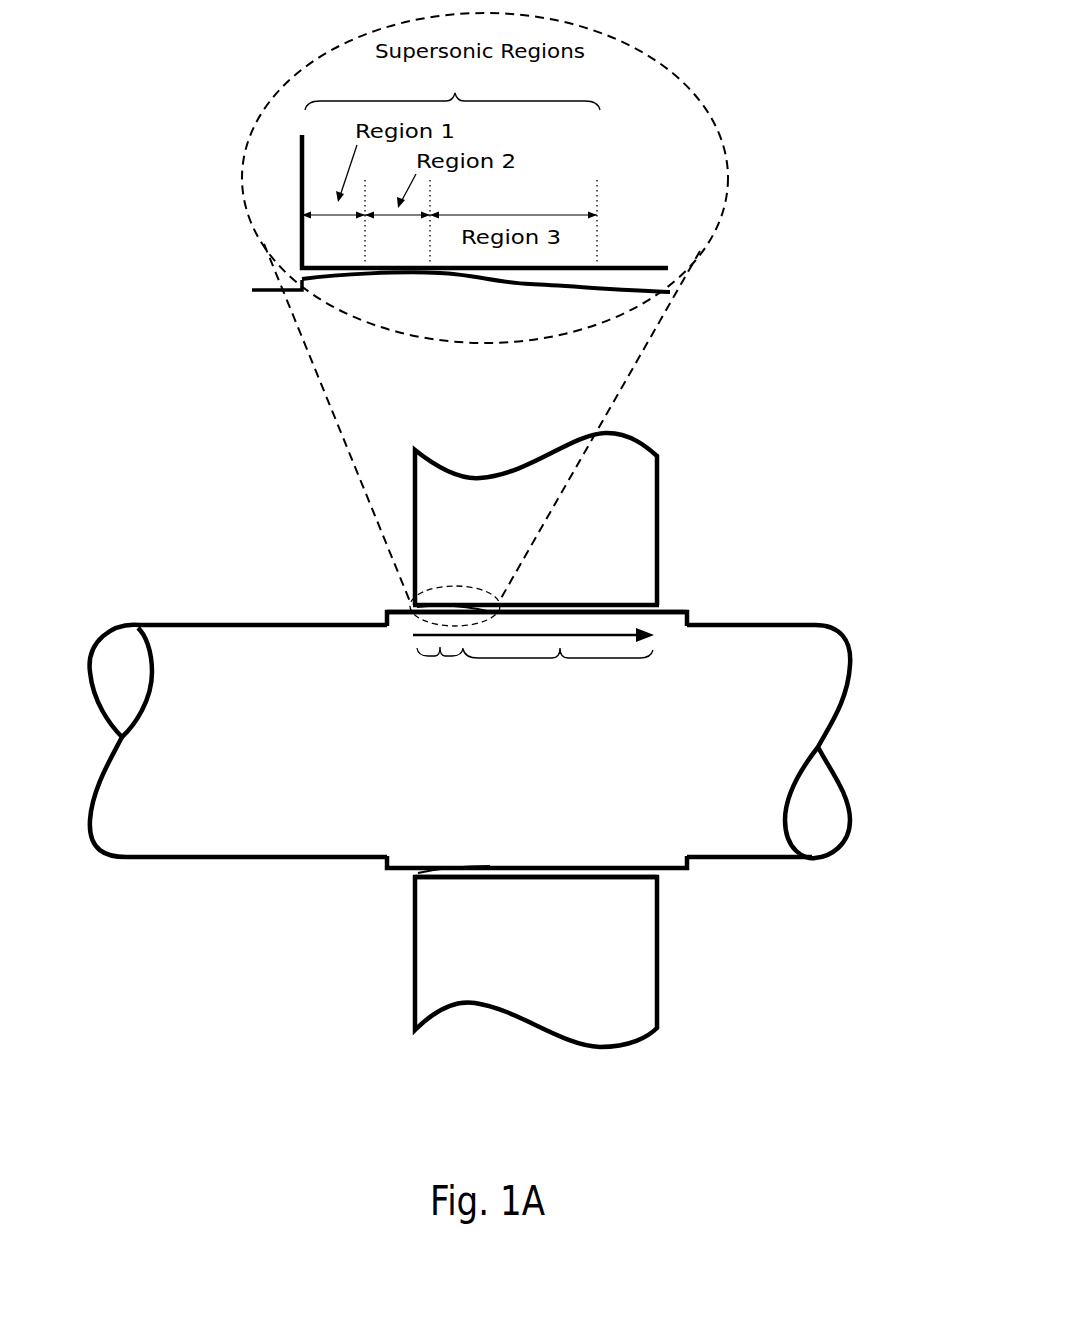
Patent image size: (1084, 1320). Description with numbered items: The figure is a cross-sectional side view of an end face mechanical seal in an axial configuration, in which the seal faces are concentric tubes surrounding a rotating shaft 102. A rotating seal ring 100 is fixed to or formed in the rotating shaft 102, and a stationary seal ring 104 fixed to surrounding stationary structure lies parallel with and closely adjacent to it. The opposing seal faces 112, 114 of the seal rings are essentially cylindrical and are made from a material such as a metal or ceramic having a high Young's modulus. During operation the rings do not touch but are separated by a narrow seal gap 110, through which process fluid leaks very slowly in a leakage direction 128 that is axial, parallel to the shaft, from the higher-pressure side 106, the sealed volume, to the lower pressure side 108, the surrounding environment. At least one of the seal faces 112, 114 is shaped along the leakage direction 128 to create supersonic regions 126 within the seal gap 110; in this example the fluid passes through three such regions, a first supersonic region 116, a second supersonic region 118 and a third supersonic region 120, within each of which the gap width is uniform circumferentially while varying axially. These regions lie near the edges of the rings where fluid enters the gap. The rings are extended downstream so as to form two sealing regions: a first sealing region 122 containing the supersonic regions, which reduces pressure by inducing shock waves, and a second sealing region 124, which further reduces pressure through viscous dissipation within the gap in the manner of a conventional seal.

The rotating seal ring 100 is at (685, 611).
The rotating shaft 102 is at (470, 742).
The stationary seal ring 104 is at (536, 962).
The higher-pressure side 106 is at (249, 562).
The lower pressure side 108 is at (821, 563).
The seal gap 110 is at (668, 280).
The seal face 112 is at (636, 291).
The seal face 114 is at (630, 268).
The first supersonic region 116 is at (333, 235).
The second supersonic region 118 is at (397, 235).
The third supersonic region 120 is at (513, 199).
The first sealing region 122 is at (440, 670).
The second sealing region 124 is at (558, 671).
The supersonic regions 126 is at (452, 86).
The leakage direction 128 is at (423, 637).